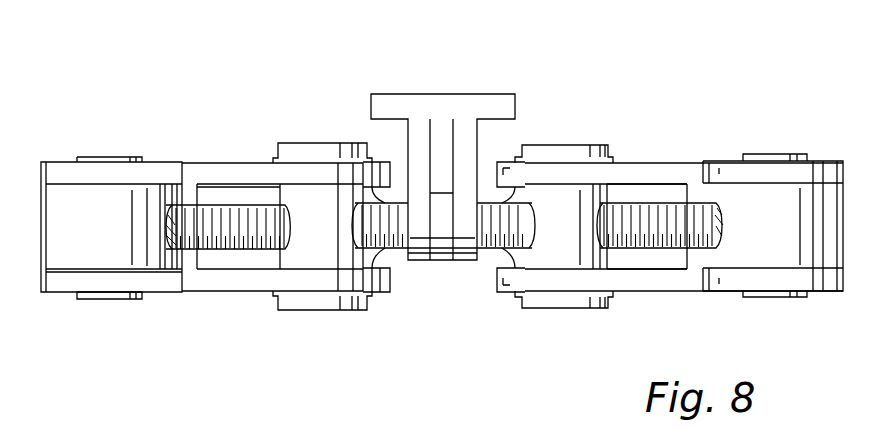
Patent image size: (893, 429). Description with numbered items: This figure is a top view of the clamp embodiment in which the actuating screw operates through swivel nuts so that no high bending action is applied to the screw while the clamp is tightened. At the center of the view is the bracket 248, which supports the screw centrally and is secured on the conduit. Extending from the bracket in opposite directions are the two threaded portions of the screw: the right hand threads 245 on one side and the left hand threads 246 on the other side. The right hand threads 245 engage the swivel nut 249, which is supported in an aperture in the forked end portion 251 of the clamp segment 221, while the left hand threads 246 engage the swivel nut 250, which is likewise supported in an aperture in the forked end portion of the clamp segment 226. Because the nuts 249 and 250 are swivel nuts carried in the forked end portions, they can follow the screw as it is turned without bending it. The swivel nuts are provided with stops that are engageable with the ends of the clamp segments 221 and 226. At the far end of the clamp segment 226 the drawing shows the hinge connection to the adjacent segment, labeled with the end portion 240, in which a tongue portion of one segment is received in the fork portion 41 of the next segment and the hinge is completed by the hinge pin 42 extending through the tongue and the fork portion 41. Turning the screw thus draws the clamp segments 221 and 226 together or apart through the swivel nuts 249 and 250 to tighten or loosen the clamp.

The fork portion 41 is at (50, 162).
The hinge pin 42 is at (104, 157).
The end cap body 240 is at (100, 243).
The clamp segment 226 is at (190, 293).
The left hand threads 246 is at (221, 205).
The swivel nut 250 is at (297, 143).
The bracket 248 is at (417, 125).
The swivel nut 249 is at (565, 143).
The forked end portion 251 is at (648, 163).
The right hand threads 245 is at (665, 203).
The clamp segment 221 is at (700, 291).